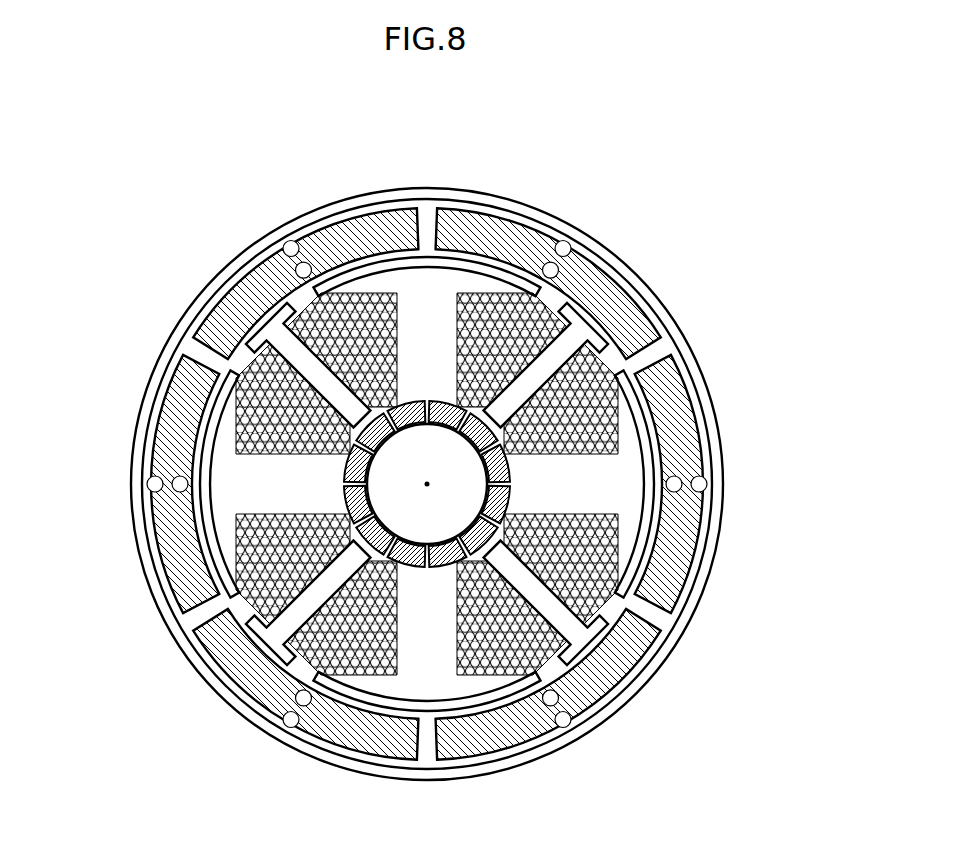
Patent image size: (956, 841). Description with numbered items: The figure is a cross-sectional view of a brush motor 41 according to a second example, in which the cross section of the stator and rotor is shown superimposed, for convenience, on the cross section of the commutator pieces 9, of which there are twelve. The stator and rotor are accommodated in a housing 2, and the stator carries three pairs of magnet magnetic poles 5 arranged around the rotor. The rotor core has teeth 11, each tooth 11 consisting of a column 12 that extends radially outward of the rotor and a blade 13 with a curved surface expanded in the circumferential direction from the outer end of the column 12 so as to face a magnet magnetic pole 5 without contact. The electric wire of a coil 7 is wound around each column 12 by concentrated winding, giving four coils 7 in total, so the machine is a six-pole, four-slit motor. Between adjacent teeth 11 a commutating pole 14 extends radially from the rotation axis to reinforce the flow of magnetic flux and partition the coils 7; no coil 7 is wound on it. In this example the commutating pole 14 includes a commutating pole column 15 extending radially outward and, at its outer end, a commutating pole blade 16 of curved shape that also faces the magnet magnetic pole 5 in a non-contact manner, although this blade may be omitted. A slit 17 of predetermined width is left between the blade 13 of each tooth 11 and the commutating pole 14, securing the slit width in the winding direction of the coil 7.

The brush motor 41 is at (114, 231).
The housing 2 is at (155, 367).
The magnet magnetic pole 5 is at (158, 403).
The coil 7 is at (231, 602).
The commutator piece 9 is at (487, 543).
The tooth 11 is at (442, 352).
The column 12 is at (247, 533).
The blade 13 is at (200, 453).
The commutating pole 14 is at (559, 297).
The commutating pole column 15 is at (659, 317).
The commutating pole blade 16 is at (580, 376).
The slit 17 is at (292, 673).